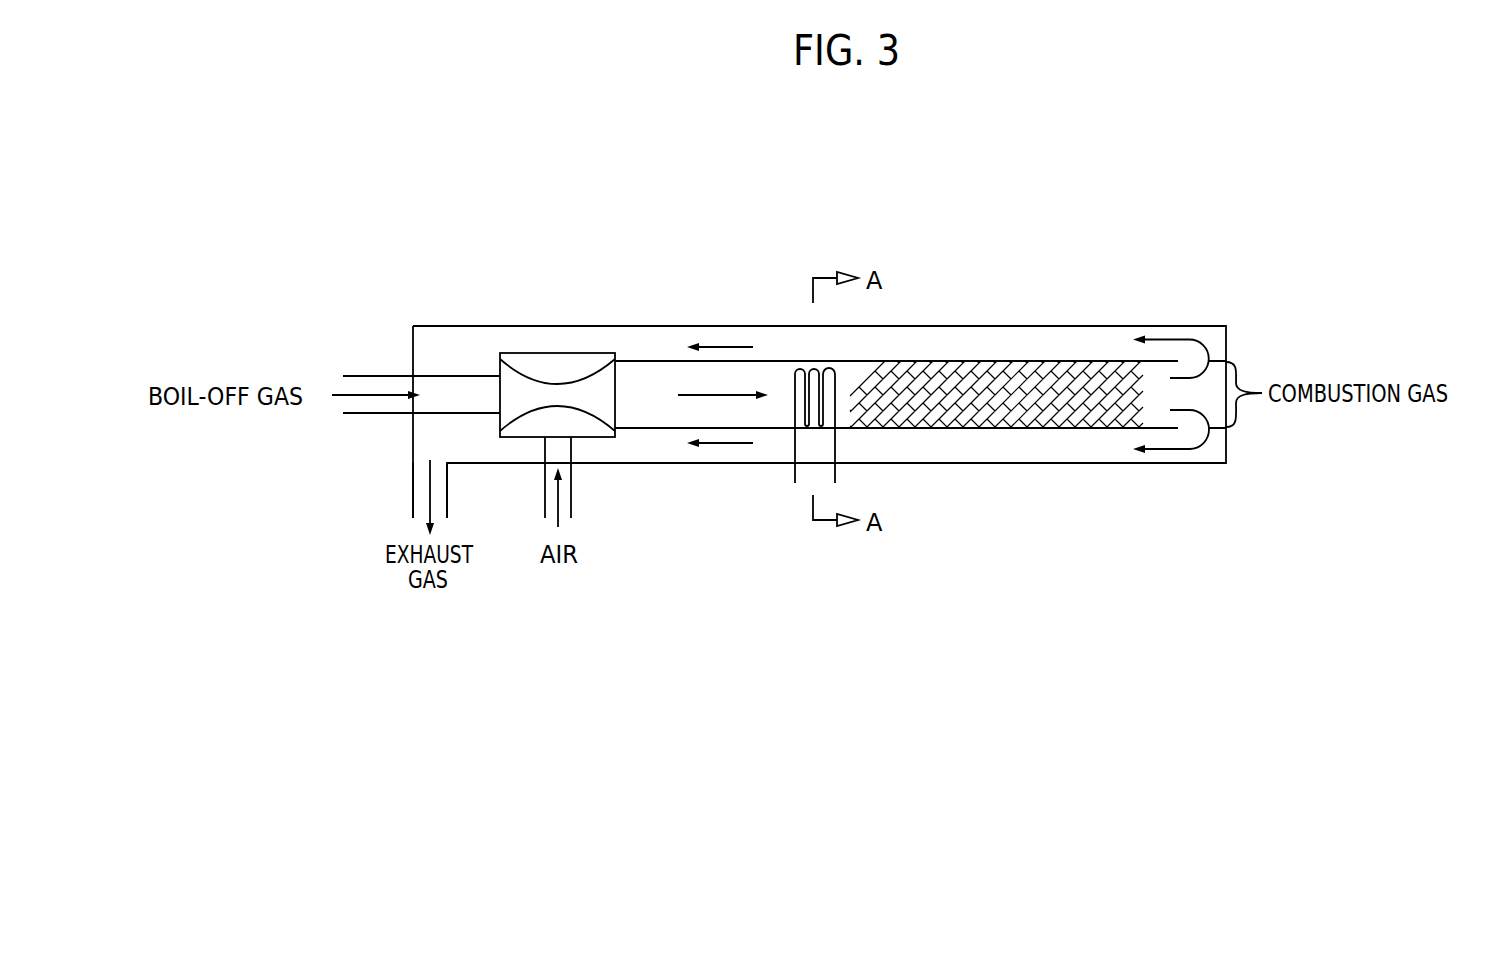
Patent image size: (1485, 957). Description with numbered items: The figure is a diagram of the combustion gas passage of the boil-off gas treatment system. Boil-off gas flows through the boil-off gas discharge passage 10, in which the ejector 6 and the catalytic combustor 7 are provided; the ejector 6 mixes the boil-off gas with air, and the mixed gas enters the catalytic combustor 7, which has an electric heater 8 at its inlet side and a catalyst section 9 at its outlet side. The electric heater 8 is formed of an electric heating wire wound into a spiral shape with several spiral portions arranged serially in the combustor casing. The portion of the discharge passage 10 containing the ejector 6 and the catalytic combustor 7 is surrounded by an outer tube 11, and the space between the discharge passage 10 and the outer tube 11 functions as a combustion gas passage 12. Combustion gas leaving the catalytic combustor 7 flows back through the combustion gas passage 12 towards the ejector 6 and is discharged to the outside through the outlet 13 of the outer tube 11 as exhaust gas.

The ejector 6 is at (558, 353).
The catalytic combustor 7 is at (850, 361).
The electric heater 8 is at (800, 368).
The catalyst section 9 is at (995, 360).
The boil-off gas discharge passage 10 is at (663, 360).
The outer tube 11 is at (1035, 463).
The combustion gas passage 12 is at (963, 458).
The outlet 13 is at (413, 487).